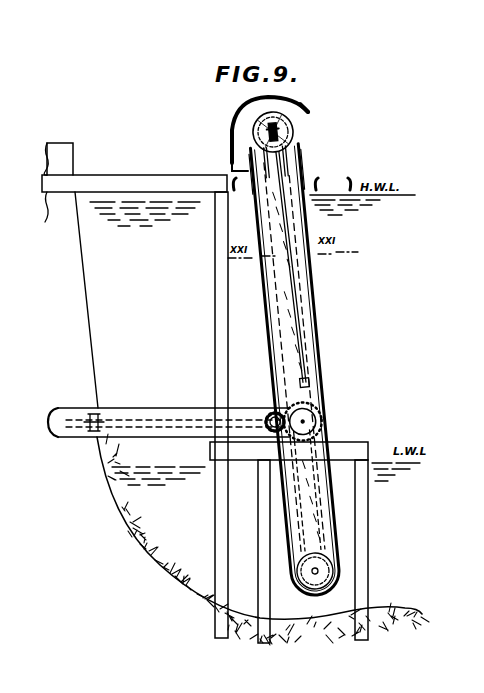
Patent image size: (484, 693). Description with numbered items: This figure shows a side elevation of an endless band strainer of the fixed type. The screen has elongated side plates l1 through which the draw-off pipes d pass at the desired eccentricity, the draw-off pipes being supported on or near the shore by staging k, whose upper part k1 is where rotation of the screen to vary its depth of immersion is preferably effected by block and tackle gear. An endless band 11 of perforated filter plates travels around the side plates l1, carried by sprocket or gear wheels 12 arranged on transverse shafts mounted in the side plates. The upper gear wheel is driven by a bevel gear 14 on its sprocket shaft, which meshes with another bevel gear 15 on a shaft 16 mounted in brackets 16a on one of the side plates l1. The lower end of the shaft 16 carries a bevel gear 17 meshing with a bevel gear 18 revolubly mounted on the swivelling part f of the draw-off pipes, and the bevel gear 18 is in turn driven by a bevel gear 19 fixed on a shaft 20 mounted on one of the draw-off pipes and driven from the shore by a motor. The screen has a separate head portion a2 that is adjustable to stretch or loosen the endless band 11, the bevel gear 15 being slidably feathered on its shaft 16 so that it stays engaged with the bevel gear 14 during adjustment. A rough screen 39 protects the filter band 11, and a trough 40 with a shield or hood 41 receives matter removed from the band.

The endless band 11 is at (316, 216).
The sprocket or gear wheels 12 is at (254, 128).
The bevel gear 14 is at (255, 118).
The bevel gear 15 is at (282, 137).
The shaft 16 is at (282, 190).
The brackets 16a is at (302, 151).
The bevel gear 17 is at (308, 410).
The bevel gear 18 is at (322, 426).
The bevel gear 19 is at (262, 402).
The shaft 20 is at (180, 413).
The rough screen 39 is at (318, 306).
The trough 40 is at (232, 170).
The shield or hood 41 is at (296, 106).
The head portion a2 is at (292, 126).
The draw-off pipes d is at (118, 414).
The suction pipe f is at (270, 509).
The staging k is at (346, 452).
The upper part of the staging k1 is at (147, 177).
The side plates l1 is at (306, 278).